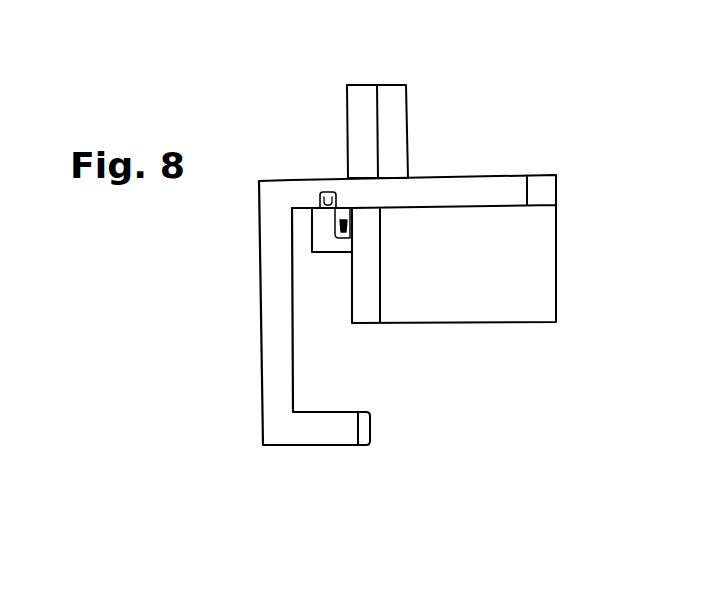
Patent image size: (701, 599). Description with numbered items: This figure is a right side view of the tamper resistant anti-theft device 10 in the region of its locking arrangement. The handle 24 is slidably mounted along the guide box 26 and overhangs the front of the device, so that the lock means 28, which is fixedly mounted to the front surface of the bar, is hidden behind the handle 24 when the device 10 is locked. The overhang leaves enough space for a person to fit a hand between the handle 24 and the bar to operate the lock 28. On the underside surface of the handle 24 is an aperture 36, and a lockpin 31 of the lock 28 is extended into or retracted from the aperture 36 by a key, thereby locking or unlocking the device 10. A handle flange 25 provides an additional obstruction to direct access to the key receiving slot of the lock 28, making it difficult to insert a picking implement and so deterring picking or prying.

The tamper resistant anti-theft device 10 is at (475, 151).
The handle 24 is at (271, 357).
The handle flange 25 is at (340, 446).
The guide box 26 is at (556, 232).
The lock means 28 is at (328, 252).
The lockpin 31 is at (327, 193).
The aperture 36 is at (321, 192).